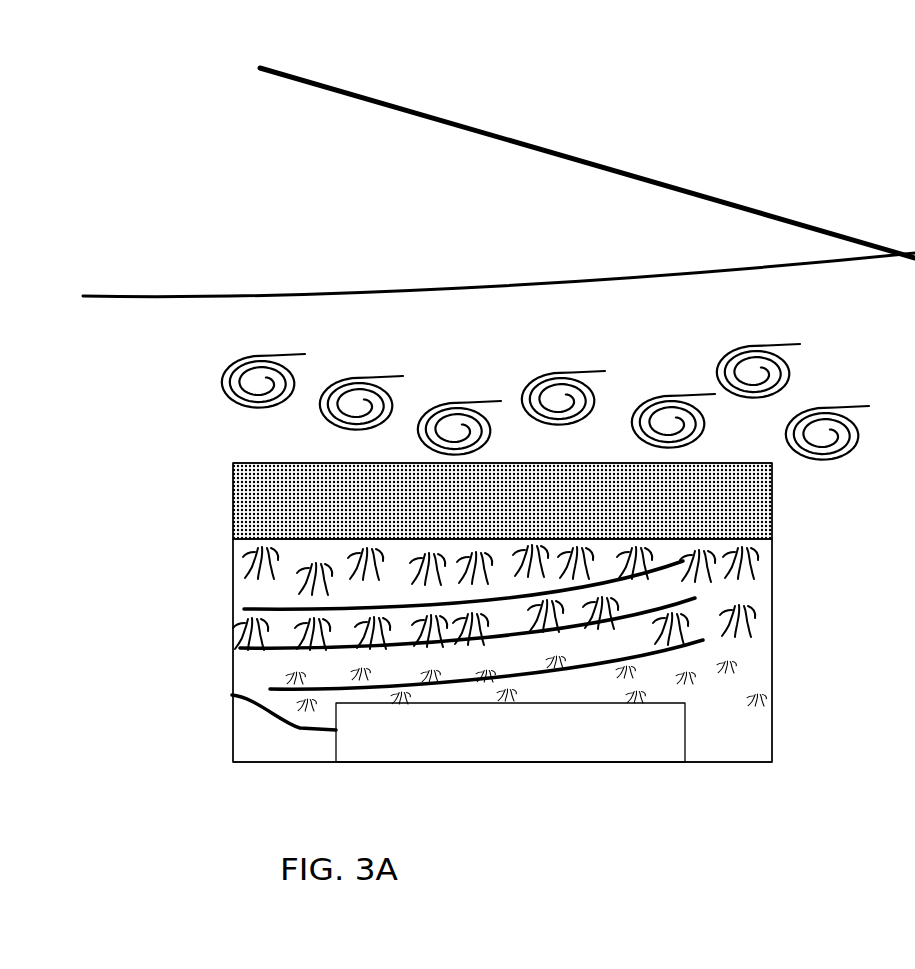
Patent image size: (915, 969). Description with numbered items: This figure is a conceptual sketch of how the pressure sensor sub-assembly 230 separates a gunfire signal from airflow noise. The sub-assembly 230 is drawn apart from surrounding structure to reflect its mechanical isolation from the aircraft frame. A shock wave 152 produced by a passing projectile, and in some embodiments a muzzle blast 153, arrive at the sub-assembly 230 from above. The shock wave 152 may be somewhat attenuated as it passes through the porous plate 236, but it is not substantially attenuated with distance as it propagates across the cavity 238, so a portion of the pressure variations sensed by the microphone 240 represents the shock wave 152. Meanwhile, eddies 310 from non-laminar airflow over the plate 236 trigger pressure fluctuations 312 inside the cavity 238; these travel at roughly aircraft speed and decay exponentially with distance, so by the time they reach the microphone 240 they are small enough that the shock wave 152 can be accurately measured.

The shock wave 152 is at (732, 193).
The muzzle blast 153 is at (365, 291).
The eddies 310 is at (783, 328).
The pressure sensor sub-assembly 230 is at (756, 788).
The porous plate 236 is at (233, 501).
The cavity 238 is at (758, 593).
The pressure fluctuations 312 is at (252, 566).
The microphone 240 is at (397, 763).